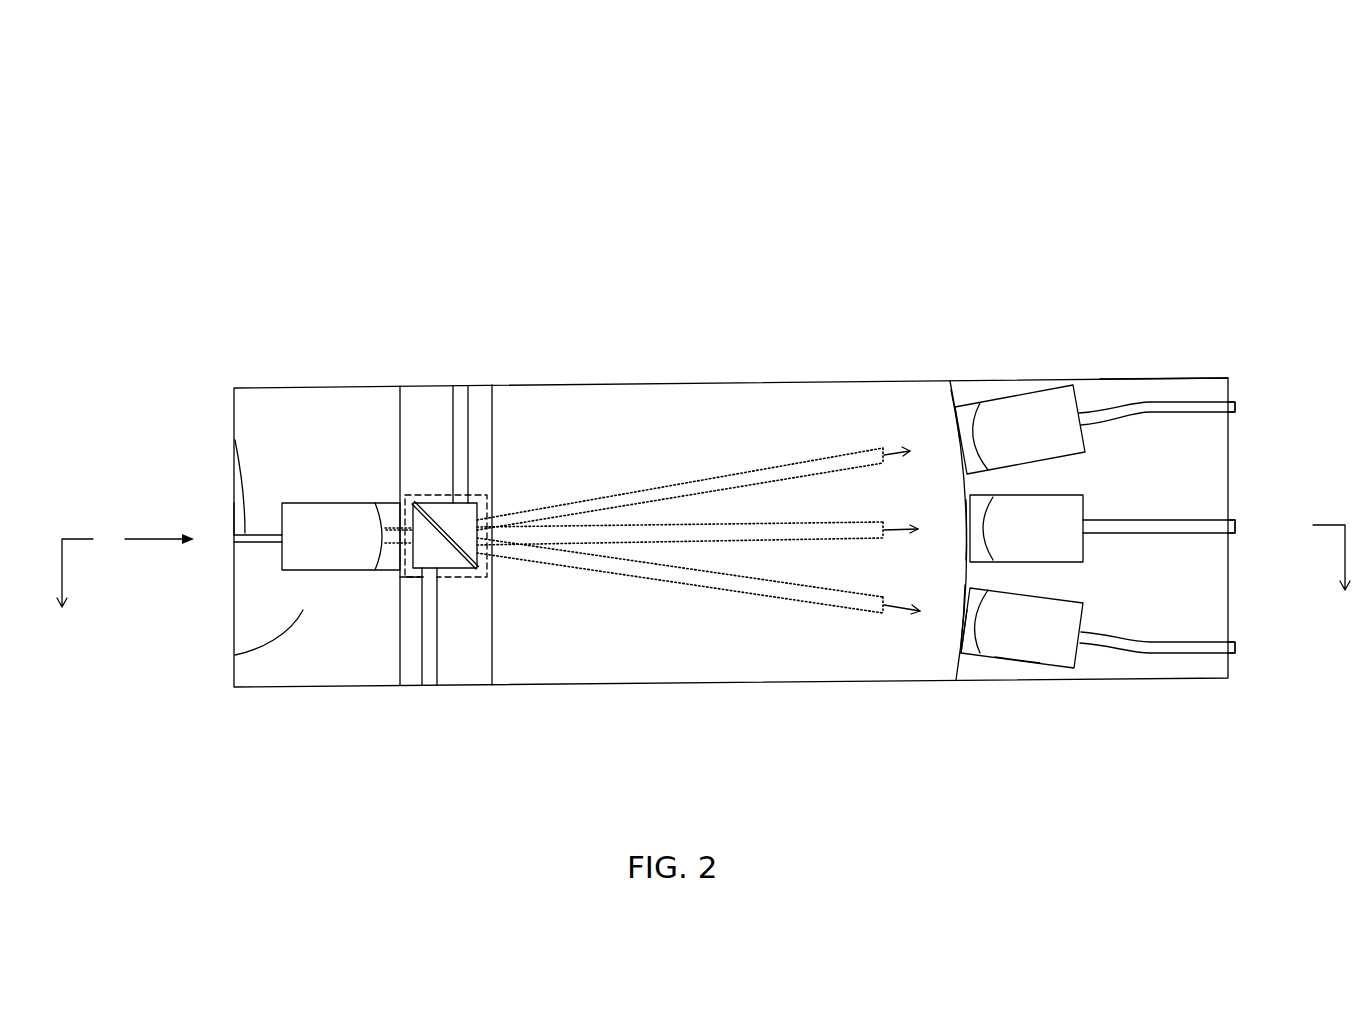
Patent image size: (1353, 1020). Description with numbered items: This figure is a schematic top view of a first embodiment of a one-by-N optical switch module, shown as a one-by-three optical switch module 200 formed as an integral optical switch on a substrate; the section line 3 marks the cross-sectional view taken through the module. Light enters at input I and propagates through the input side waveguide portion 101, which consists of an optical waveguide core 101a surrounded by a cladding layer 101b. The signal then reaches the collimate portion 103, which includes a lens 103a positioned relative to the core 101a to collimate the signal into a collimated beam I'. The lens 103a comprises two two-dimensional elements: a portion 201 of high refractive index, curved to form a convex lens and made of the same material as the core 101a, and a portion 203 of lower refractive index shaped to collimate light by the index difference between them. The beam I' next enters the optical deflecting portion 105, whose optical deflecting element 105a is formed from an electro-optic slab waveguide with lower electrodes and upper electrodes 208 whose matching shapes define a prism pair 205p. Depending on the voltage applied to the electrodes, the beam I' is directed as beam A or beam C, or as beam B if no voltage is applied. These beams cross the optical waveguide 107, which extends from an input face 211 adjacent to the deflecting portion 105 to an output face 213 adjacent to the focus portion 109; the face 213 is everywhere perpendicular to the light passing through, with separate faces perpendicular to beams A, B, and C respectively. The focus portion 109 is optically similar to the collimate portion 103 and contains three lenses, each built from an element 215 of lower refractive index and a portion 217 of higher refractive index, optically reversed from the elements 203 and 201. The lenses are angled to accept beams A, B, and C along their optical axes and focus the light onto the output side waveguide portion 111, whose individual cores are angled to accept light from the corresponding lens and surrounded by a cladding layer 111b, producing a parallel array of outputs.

The optical switch module 200 is at (281, 140).
The input side waveguide portion 101 is at (250, 327).
The optical waveguide (core) 101a is at (235, 440).
The cladding layer 101b is at (233, 503).
The collimate portion 103 is at (330, 362).
The lens 103a is at (137, 673).
The portion 201 is at (317, 572).
The portion 203 is at (387, 572).
The optical deflecting portion 105 is at (437, 357).
The optical deflecting element 105a is at (430, 495).
The upper electrodes 208 is at (468, 420).
The prism pair 205p is at (412, 588).
The input face 211 is at (491, 685).
The optical waveguide 107 is at (698, 411).
The output face 213 is at (688, 532).
The focus portion 109 is at (1017, 480).
The element 215 is at (964, 655).
The portion 217 is at (1015, 661).
The output side waveguide portion 111 is at (1214, 426).
The cladding layer 111b is at (1152, 378).
The input I is at (159, 527).
The collimated beam I' is at (380, 485).
The beam A is at (710, 587).
The beam B is at (752, 523).
The beam C is at (697, 480).
The view 3— 3 is at (694, 566).